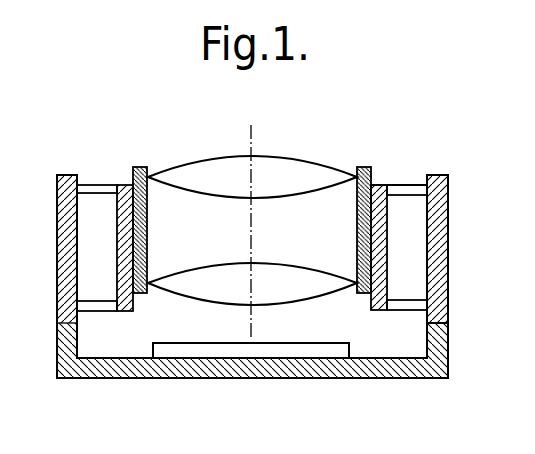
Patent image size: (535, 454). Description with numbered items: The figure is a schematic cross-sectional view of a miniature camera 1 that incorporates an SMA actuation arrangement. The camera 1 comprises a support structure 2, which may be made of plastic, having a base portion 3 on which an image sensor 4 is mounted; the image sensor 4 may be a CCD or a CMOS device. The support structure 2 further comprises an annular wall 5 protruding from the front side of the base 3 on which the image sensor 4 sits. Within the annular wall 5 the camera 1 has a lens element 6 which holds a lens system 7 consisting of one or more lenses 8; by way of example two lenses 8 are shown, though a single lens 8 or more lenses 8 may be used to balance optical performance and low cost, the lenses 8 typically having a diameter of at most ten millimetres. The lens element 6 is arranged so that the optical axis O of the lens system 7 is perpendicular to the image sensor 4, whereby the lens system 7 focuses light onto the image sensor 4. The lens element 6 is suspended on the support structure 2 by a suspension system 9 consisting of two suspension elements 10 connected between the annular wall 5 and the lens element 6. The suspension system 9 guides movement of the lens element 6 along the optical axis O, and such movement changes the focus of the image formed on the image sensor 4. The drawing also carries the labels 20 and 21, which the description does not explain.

The camera 1 is at (16, 285).
The support structure 2 is at (442, 391).
The base portion 3 is at (255, 365).
The image sensor 4 is at (175, 350).
The annular wall 5 is at (437, 257).
The lens element 6 is at (380, 160).
The lens system 7 is at (182, 146).
The lens 8 is at (280, 166).
The suspension system 9 is at (408, 160).
The suspension element 10 is at (418, 188).
The inner frame wall 20 is at (377, 217).
The lens holder 21 is at (356, 177).
The optical axis O is at (250, 130).